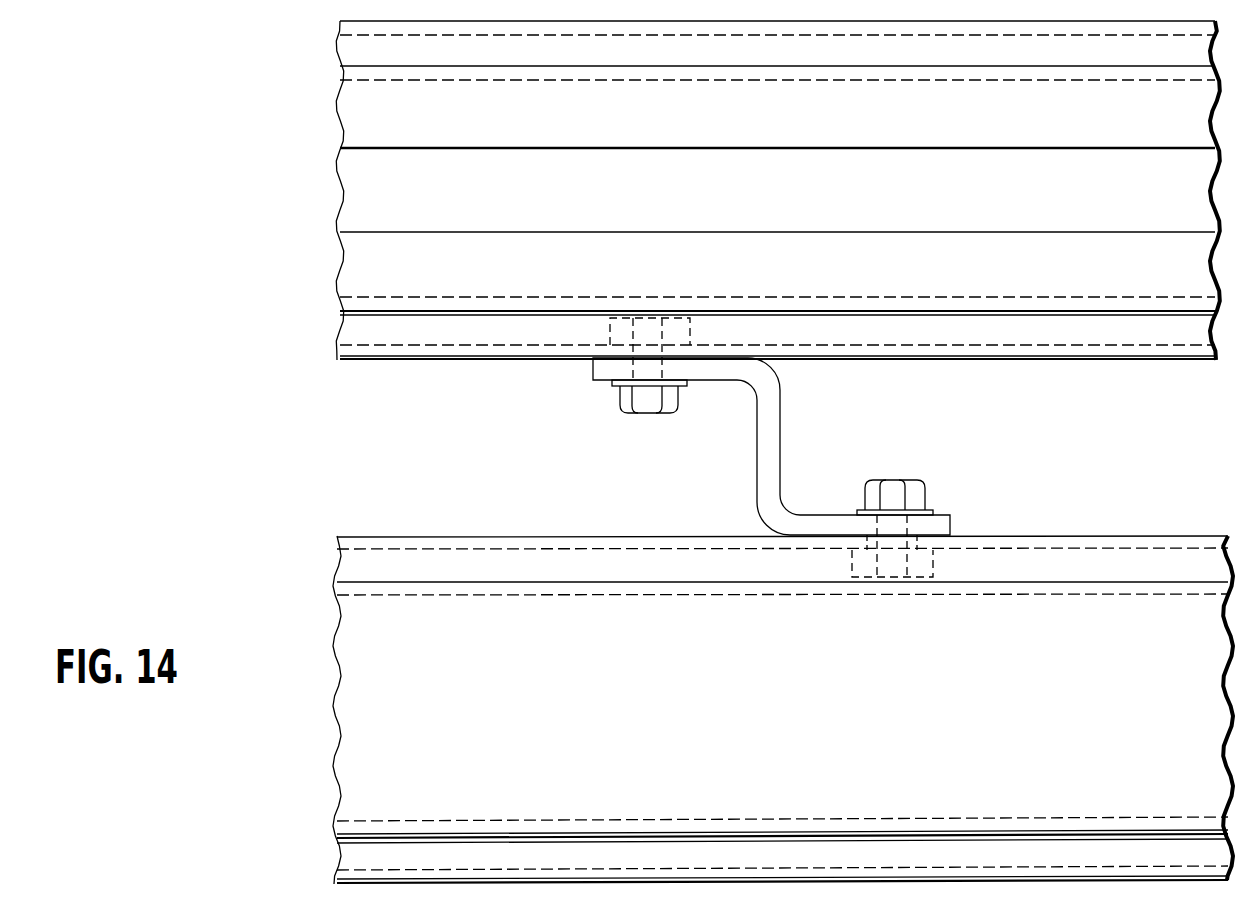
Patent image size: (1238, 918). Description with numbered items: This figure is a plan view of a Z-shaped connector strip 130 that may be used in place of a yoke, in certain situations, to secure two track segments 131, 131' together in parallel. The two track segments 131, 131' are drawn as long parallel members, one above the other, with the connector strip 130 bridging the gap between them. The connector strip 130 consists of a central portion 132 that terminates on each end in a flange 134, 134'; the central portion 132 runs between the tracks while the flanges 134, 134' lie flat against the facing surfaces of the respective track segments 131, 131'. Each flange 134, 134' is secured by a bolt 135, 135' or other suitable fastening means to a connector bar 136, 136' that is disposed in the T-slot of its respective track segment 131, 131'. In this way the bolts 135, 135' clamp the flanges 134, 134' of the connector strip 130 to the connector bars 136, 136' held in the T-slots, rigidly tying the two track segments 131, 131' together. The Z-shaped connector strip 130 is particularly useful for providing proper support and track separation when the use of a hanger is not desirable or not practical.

The Z-shaped connector strip 130 is at (718, 455).
The track segment 131 is at (731, 190).
The track segment 131' is at (731, 710).
The central portion 132 is at (781, 433).
The flange 134 is at (670, 391).
The flange 134' is at (870, 488).
The bolt 135 is at (618, 402).
The bolt 135' is at (907, 471).
The connector bar 136 is at (636, 311).
The connector bar 136' is at (897, 580).